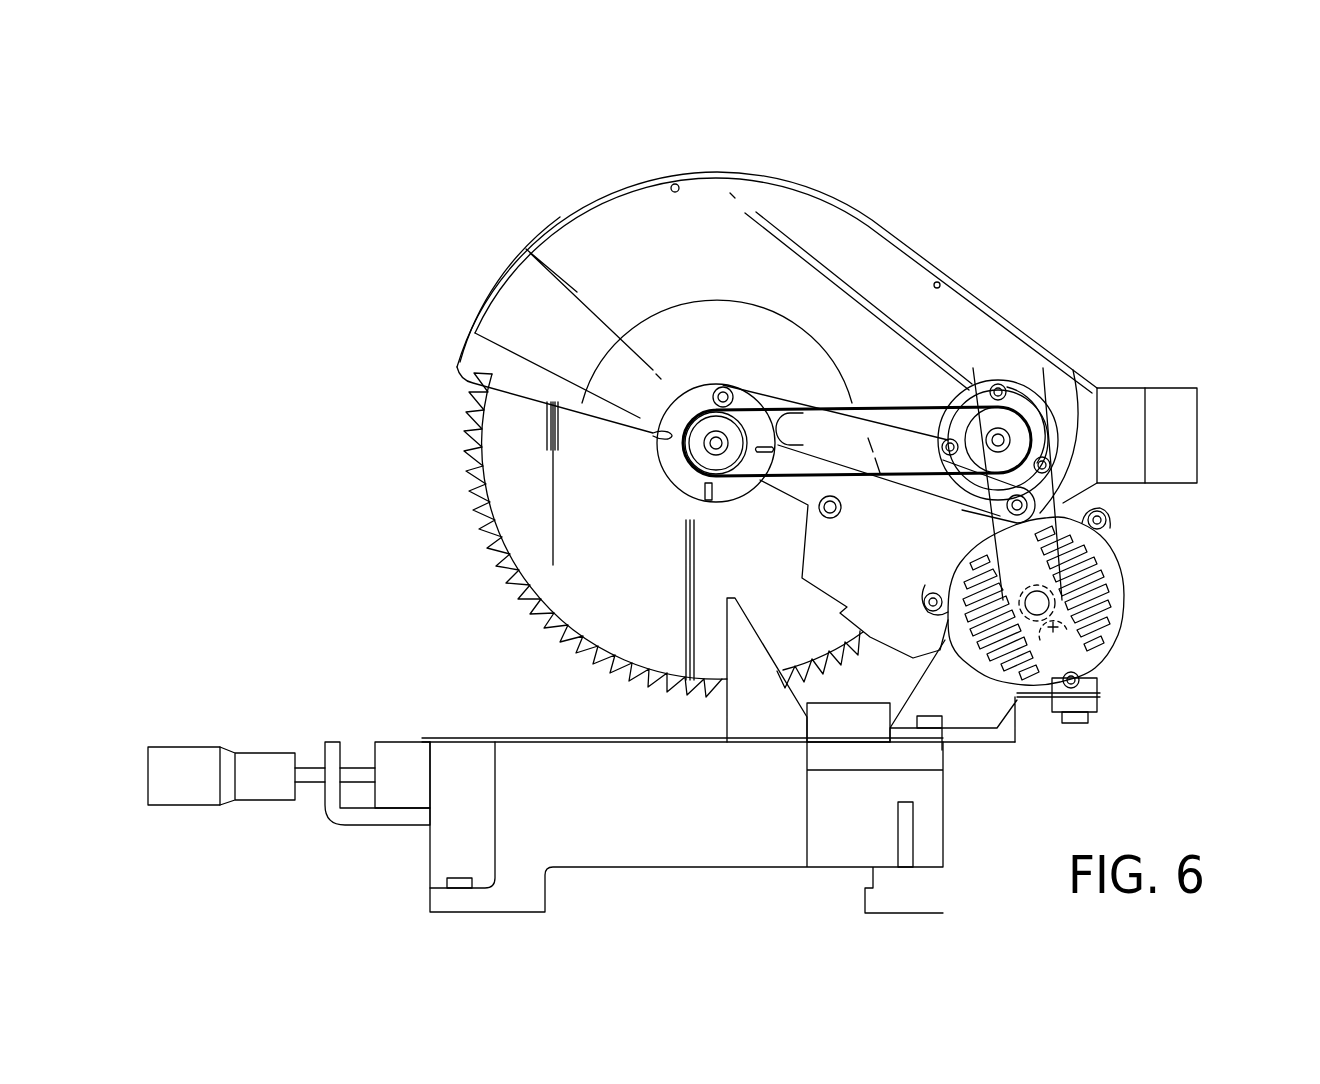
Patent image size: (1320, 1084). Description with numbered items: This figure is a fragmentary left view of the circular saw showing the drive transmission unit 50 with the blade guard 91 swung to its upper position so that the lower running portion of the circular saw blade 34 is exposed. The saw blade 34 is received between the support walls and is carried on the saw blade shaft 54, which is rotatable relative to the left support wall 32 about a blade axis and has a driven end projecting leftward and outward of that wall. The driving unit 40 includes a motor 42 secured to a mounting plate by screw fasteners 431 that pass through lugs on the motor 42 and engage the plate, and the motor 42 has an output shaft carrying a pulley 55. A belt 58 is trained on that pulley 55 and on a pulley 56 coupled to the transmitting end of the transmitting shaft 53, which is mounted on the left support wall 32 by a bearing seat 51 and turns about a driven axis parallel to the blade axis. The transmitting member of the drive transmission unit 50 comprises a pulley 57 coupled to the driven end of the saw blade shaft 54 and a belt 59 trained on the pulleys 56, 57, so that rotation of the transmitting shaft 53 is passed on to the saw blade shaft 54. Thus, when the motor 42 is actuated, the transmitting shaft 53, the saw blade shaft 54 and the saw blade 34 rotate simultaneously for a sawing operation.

The left support wall 32 is at (706, 172).
The blade guard 91 is at (558, 217).
The circular saw blade 34 is at (480, 428).
The saw blade shaft 54 is at (717, 430).
The pulley 57 is at (745, 430).
The belt 59 is at (853, 405).
The drive transmission unit 50 is at (910, 388).
The transmitting shaft 53 is at (977, 384).
The bearing seat 51 is at (1015, 385).
The pulley 56 is at (1022, 422).
The belt 58 is at (1075, 440).
The driving unit 40 is at (1127, 571).
The motor 42 is at (1128, 612).
The screw fasteners 431 is at (1108, 520).
The pulley 55 is at (1085, 648).